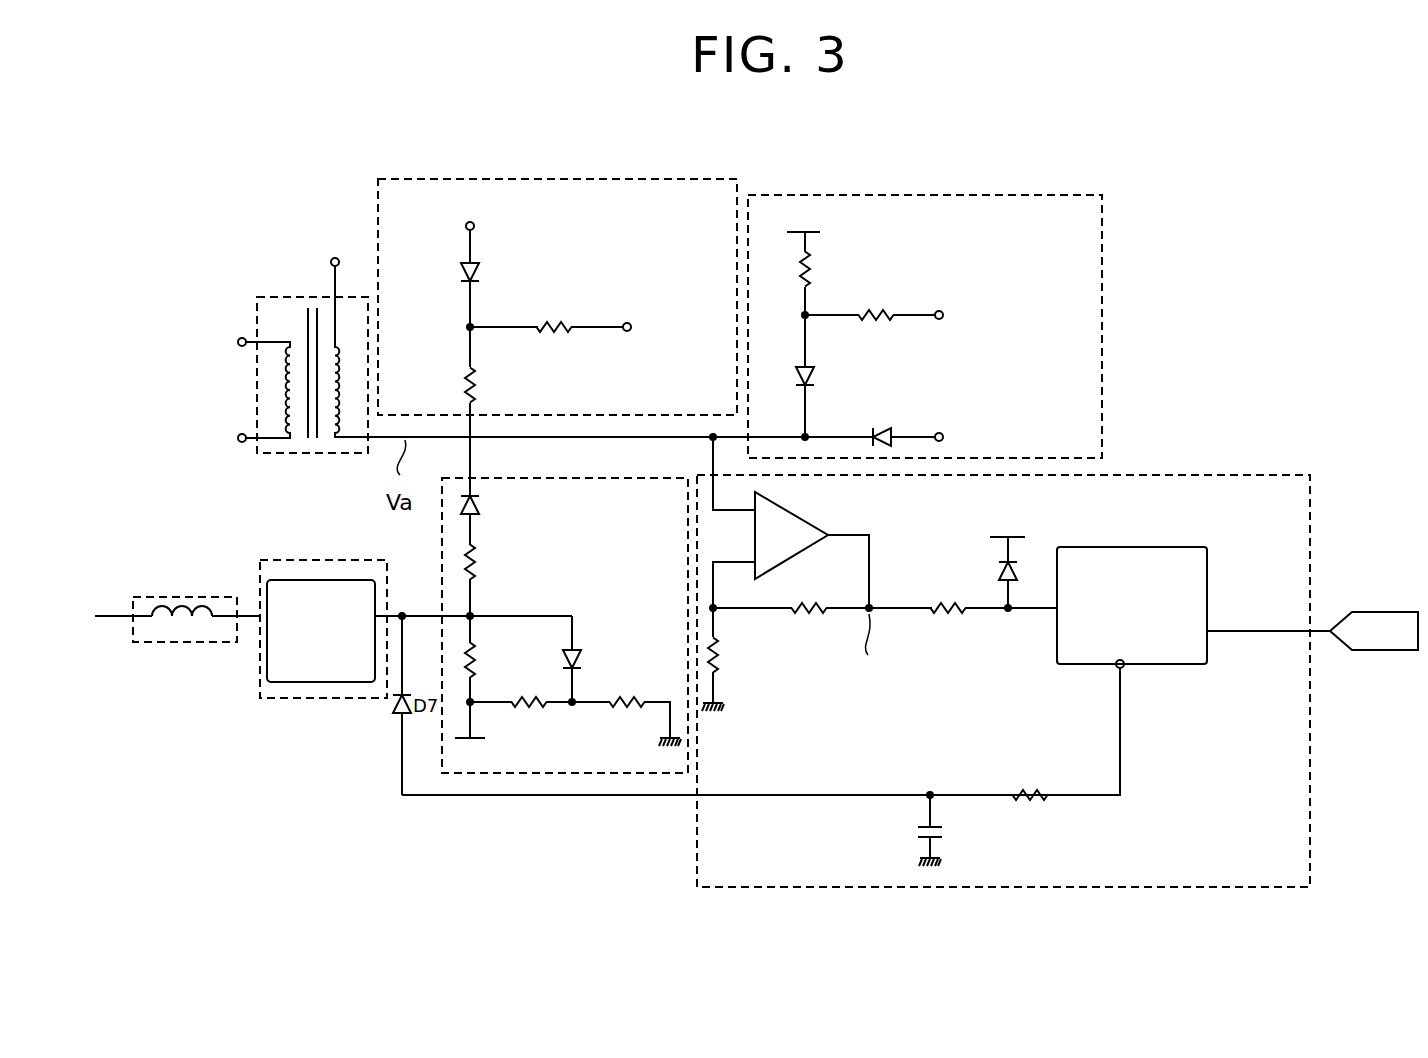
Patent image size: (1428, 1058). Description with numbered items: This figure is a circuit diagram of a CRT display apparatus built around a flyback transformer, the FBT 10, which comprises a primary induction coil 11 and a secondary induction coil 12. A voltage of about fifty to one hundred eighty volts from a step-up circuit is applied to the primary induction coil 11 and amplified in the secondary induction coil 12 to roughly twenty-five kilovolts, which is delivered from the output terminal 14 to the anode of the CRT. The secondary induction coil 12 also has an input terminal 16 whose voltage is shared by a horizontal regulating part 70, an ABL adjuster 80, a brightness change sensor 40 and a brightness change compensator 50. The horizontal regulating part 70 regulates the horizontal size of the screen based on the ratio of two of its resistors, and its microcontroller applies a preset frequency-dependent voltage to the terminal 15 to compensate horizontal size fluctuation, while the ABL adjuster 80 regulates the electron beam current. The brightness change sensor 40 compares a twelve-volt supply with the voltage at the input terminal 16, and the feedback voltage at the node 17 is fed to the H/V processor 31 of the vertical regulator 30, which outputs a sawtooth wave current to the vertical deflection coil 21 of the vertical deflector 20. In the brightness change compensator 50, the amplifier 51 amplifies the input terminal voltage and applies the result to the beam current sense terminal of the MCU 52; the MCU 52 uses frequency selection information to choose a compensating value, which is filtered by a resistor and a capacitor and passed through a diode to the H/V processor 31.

The FBT 10 is at (285, 297).
The primary induction coil 11 is at (283, 442).
The secondary induction coil 12 is at (328, 442).
The output terminal 14 is at (341, 262).
The terminal 15 is at (468, 327).
The input terminal 16 is at (710, 438).
The node 17 is at (472, 615).
The vertical deflector 20 is at (177, 633).
The vertical deflection coil 21 is at (185, 597).
The vertical regulator 30 is at (331, 668).
The H/V processor 31 is at (303, 683).
The brightness change sensor 40 is at (571, 775).
The brightness change compensator 50 is at (910, 681).
The amplifier 51 is at (801, 519).
The MCU 52 is at (1209, 583).
The horizontal regulating part 70 is at (587, 179).
The ABL adjuster 80 is at (1103, 265).